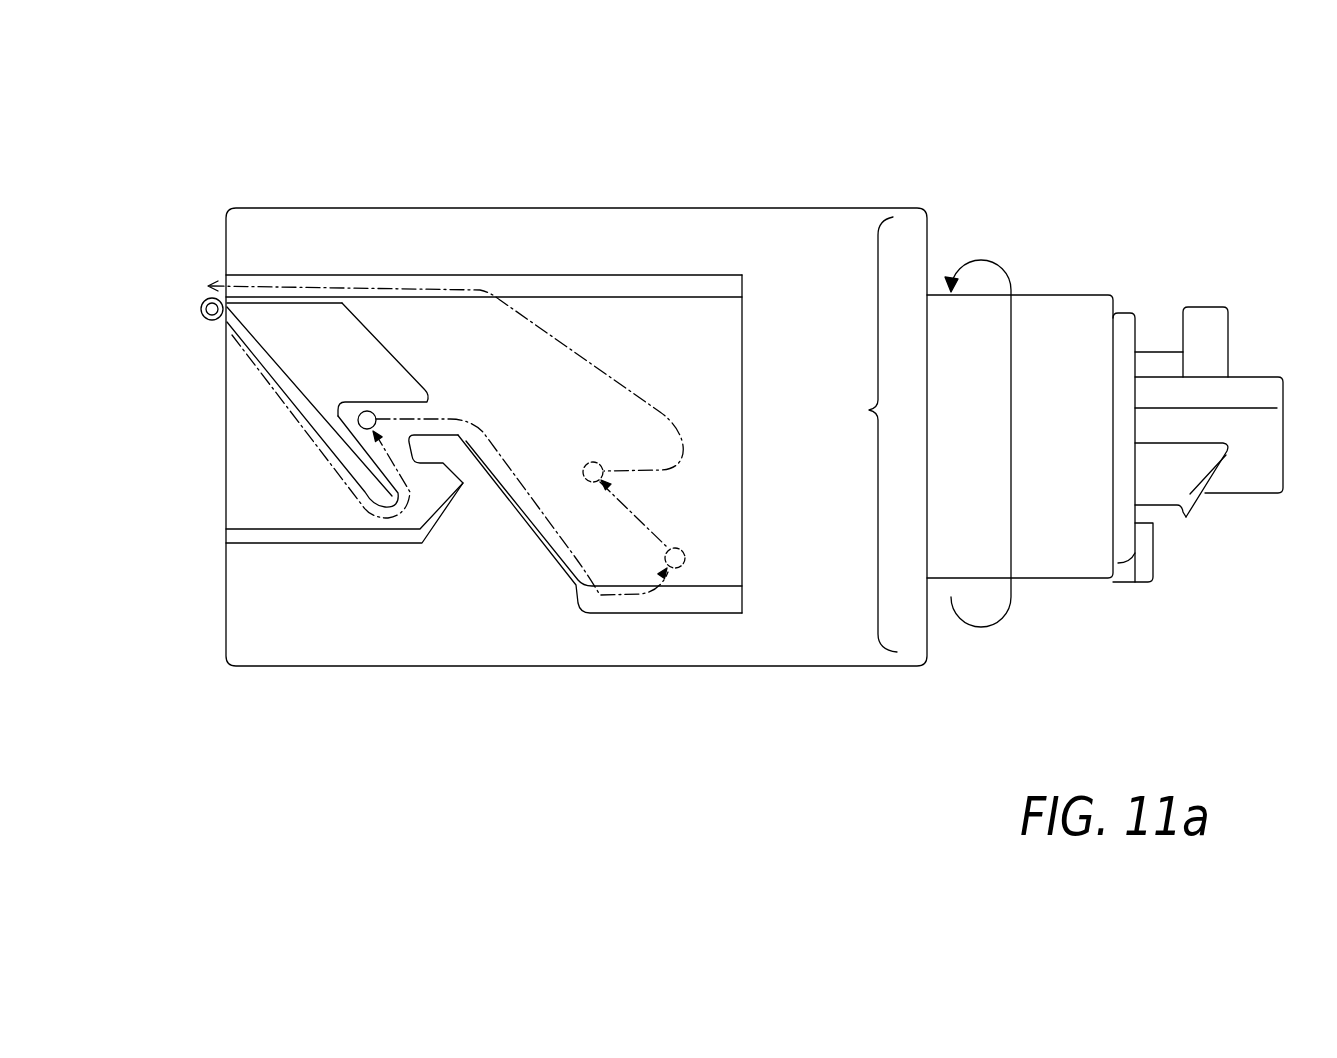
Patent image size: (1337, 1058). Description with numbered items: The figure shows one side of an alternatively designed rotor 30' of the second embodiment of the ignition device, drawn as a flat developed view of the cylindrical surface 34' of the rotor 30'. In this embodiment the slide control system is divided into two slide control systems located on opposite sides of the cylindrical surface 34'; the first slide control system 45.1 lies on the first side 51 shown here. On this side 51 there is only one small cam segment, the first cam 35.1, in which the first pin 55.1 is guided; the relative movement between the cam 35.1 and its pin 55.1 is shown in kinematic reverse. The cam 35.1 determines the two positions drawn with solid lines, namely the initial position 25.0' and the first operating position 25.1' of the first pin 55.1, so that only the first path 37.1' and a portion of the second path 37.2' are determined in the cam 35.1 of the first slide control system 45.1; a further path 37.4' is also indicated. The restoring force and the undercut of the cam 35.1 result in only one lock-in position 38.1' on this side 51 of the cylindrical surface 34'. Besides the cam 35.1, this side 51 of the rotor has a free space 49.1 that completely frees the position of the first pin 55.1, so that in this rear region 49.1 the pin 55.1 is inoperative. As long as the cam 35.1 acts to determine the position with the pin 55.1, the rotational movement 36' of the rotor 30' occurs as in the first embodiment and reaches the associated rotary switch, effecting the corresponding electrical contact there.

The rotor 30' is at (936, 322).
The cylindrical surface 34' is at (576, 483).
The rotational movement 36' is at (1004, 466).
The first side 51 is at (866, 434).
The first slide control system 45.1 is at (400, 182).
The first cam 35.1 is at (290, 283).
The free space 49.1 is at (712, 344).
The return path 37.4' is at (445, 351).
The second path 37.2' is at (530, 507).
The lock-in position 38.1' is at (382, 359).
The first path 37.1' is at (318, 410).
The first operating position 25.1' is at (332, 385).
The first pin 55.1 is at (204, 302).
The initial position 25.0' is at (185, 337).